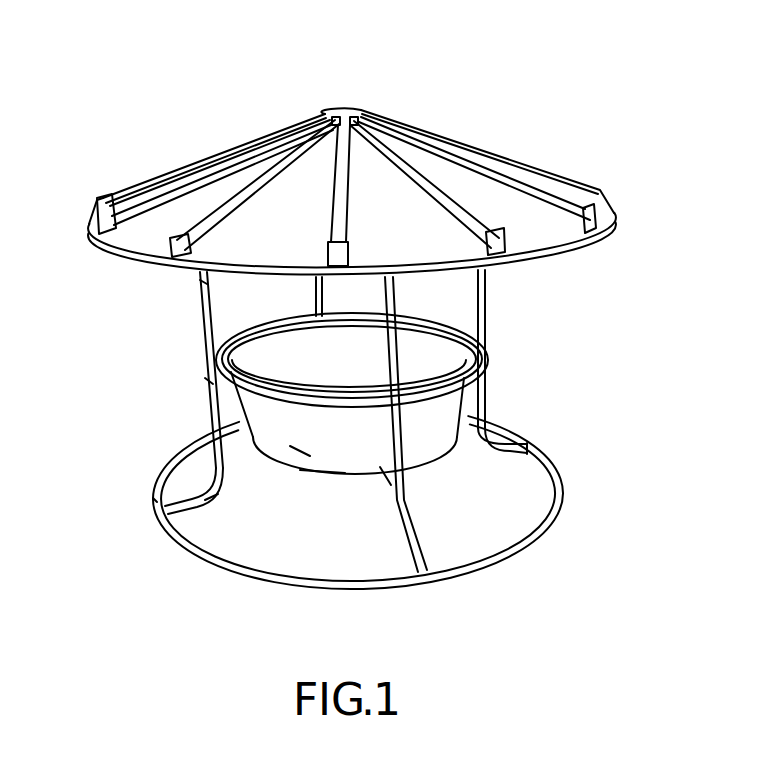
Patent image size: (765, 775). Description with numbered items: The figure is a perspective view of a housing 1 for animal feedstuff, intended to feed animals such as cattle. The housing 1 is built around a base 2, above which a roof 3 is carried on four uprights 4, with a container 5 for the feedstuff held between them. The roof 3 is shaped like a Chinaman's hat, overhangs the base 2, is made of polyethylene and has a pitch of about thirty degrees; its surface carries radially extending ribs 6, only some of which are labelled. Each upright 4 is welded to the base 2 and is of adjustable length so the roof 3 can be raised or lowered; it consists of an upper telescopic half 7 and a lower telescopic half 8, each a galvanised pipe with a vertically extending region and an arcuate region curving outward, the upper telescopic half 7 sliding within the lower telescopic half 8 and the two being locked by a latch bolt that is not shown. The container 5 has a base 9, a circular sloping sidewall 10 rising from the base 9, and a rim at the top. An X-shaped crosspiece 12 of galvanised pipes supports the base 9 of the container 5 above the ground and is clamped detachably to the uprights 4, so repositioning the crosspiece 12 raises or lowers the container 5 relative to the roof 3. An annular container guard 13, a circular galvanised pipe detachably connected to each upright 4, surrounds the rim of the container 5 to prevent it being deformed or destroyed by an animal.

The housing 1 is at (149, 518).
The base 2 is at (493, 555).
The roof 3 is at (448, 137).
The uprights 4 is at (200, 330).
The container 5 is at (353, 451).
The ribs 6 is at (337, 168).
The upper telescopic half 7 is at (380, 284).
The lower telescopic half 8 is at (212, 384).
The base of the container 9 is at (323, 473).
The sidewall 10 is at (297, 445).
The crosspiece 12 is at (218, 470).
The container guard 13 is at (390, 349).